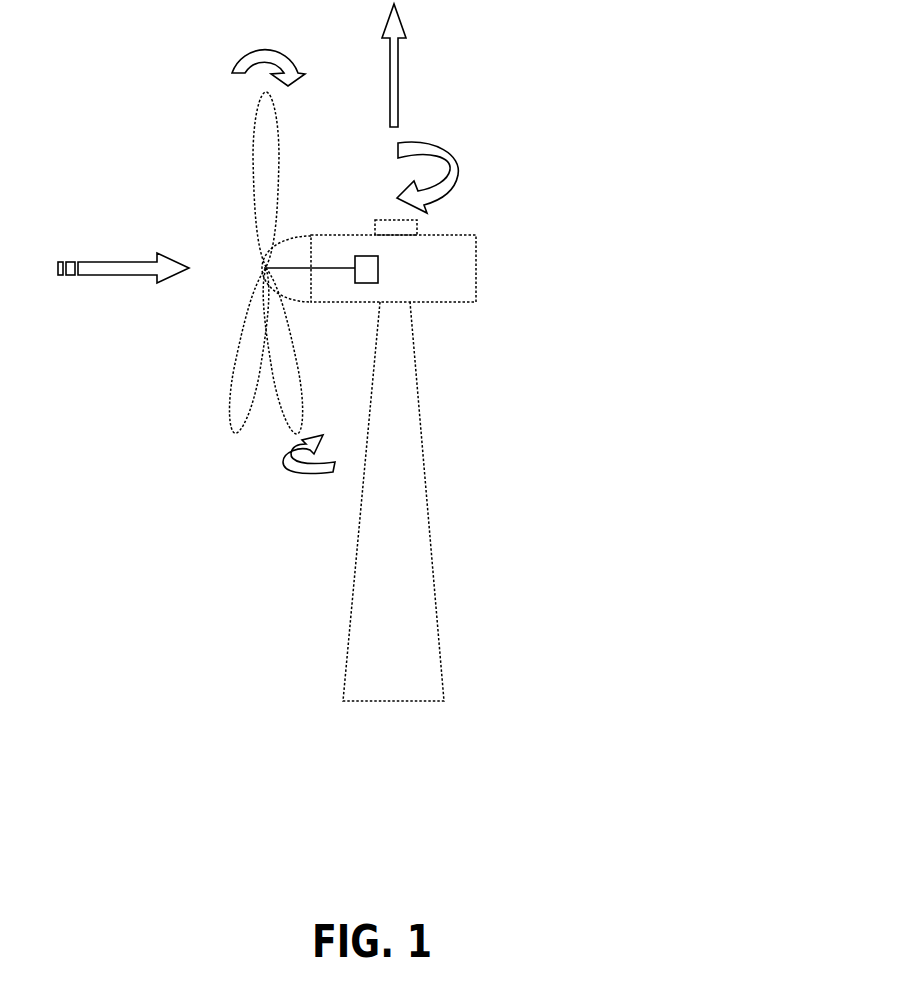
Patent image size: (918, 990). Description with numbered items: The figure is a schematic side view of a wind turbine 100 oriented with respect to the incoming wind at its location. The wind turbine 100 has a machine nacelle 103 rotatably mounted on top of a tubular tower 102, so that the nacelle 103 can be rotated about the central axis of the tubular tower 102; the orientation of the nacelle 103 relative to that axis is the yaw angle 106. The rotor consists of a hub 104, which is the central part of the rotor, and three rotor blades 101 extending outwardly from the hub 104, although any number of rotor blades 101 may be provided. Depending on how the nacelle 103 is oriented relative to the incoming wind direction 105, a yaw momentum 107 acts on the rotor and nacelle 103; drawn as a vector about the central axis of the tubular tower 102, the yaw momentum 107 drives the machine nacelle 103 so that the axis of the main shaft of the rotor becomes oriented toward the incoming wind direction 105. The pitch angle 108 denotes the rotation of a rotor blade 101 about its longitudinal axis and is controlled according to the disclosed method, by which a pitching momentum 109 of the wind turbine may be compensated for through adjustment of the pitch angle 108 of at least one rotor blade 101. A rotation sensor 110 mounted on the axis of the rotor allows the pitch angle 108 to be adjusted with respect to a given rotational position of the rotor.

The wind turbine 100 is at (534, 66).
The rotor blades 101 is at (252, 196).
The tubular tower 102 is at (430, 526).
The machine nacelle 103 is at (478, 272).
The hub 104 is at (300, 237).
The incoming wind direction 105 is at (157, 278).
The yaw angle 106 is at (456, 176).
The yaw momentum 107 is at (373, 57).
The pitch angle 108 is at (287, 465).
The pitching momentum 109 is at (236, 72).
The rotation sensor 110 is at (367, 284).